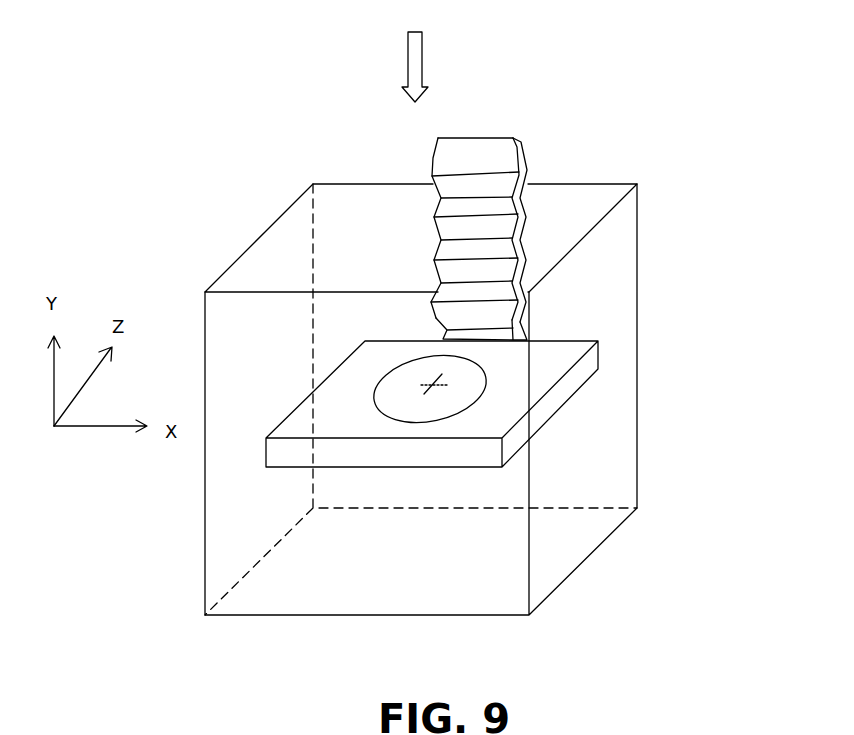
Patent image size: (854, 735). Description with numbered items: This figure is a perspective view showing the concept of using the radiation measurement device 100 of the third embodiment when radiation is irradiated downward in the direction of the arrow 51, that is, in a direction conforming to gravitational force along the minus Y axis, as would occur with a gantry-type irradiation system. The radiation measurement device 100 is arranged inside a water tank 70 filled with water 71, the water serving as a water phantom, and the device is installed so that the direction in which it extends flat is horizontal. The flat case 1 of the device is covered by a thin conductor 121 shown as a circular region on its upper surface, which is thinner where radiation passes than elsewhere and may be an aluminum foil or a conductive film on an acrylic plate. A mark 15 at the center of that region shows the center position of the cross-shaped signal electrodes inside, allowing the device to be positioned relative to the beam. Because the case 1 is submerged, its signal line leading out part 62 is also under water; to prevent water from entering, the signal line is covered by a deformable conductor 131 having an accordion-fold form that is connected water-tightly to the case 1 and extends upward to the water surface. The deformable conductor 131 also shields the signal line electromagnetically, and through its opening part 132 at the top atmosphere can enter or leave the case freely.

The radiation measurement device 100 is at (721, 372).
The water tank 70 is at (637, 244).
The water 71 is at (555, 210).
The case 1 is at (557, 350).
The conductor 121 is at (392, 402).
The mark 15 is at (436, 388).
The deformable conductor 131 is at (527, 167).
The opening part 132 is at (503, 137).
The signal line leading out part 62 is at (443, 335).
The arrow 51 is at (403, 63).